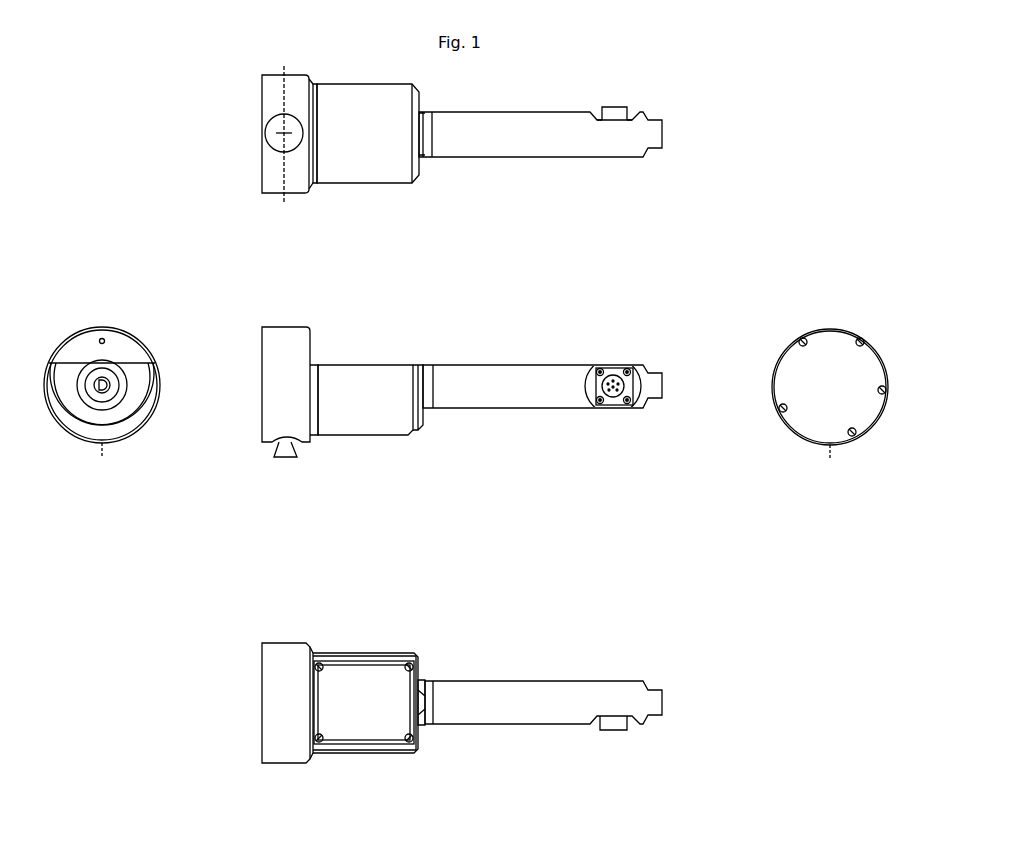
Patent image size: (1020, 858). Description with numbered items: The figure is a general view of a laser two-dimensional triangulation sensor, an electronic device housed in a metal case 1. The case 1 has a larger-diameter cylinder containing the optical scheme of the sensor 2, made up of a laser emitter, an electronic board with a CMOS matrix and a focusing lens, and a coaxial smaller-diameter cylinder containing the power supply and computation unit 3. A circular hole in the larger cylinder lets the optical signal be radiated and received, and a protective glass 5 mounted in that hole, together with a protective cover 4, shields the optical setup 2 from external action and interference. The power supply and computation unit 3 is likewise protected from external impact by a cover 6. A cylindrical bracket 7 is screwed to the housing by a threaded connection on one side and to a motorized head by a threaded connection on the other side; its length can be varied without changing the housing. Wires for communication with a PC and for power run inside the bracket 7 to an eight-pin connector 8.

The case of the laser two-dimensional triangulation sensor 1 is at (470, 353).
The optical scheme of the sensor 2 is at (288, 369).
The power supply and computation unit 3 is at (378, 398).
The protective cover of the optical setup of the sensor 4 is at (858, 372).
The protective glass of the optical setup of the sensor 5 is at (300, 141).
The protective cover of the power supply and the computation unit 6 is at (336, 695).
The cylindrical bracket 7 is at (463, 383).
The connector 8 is at (630, 400).